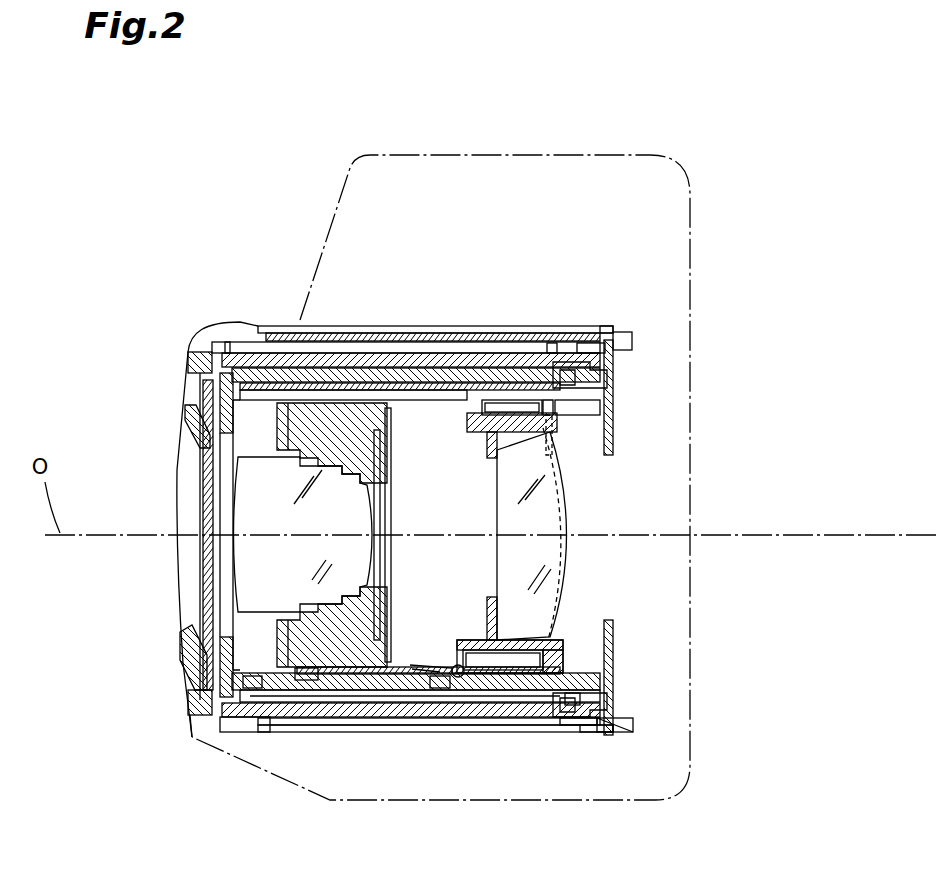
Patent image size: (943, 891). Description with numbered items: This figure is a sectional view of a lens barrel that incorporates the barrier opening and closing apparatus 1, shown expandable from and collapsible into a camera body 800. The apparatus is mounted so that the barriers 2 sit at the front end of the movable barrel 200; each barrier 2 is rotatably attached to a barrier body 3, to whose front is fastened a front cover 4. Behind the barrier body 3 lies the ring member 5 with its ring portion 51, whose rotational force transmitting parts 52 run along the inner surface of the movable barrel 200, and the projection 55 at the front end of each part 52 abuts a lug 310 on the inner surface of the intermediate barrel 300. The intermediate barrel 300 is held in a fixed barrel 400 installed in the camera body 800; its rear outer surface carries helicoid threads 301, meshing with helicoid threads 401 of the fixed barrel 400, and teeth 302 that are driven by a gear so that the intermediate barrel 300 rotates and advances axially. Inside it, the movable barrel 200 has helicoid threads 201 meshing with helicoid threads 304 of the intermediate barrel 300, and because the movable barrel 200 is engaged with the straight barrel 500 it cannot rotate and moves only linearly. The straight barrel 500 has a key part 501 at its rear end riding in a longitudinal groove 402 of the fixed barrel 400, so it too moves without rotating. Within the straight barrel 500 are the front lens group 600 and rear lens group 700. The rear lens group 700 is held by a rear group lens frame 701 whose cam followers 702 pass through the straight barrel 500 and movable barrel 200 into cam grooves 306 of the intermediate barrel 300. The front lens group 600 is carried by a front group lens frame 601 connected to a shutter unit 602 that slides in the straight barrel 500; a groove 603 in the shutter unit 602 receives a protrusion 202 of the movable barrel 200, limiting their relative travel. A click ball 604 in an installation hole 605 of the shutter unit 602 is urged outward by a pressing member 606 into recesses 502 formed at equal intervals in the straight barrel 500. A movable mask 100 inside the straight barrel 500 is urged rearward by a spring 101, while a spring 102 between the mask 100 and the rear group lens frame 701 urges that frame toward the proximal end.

The barrier opening and closing apparatus 1 is at (185, 665).
The barrier 2 is at (205, 510).
The barrier body 3 is at (205, 398).
The front cover 4 is at (190, 425).
The ring member 5 is at (222, 395).
The ring portion 51 is at (205, 368).
The rotational force transmitting part 52 is at (318, 340).
The projection 55 is at (620, 345).
The movable mask 100 is at (548, 430).
The spring 101 is at (588, 418).
The spring 102 is at (482, 420).
The movable barrel 200 is at (250, 347).
The helicoid threads 201 is at (437, 345).
The protrusion 202 is at (357, 702).
The intermediate barrel 300 is at (290, 360).
The helicoid threads 301 is at (568, 343).
The teeth 302 is at (603, 327).
The helicoid threads 304 is at (385, 365).
The cam groove 306 is at (633, 730).
The lug 310 is at (541, 343).
The fixed barrel 400 is at (453, 345).
The helicoid threads 401 is at (415, 342).
The longitudinal groove 402 is at (483, 345).
The straight barrel 500 is at (610, 376).
The key part 501 is at (612, 388).
The recess 502 is at (440, 690).
The front lens group 600 is at (235, 577).
The front group lens frame 601 is at (205, 470).
The shutter unit 602 is at (356, 398).
The groove 603 is at (327, 672).
The click ball 604 is at (460, 680).
The installation hole 605 is at (455, 680).
The pressing member 606 is at (398, 655).
The rear lens group 700 is at (566, 578).
The rear group lens frame 701 is at (560, 500).
The cam follower 702 is at (573, 735).
The camera body 800 is at (699, 214).